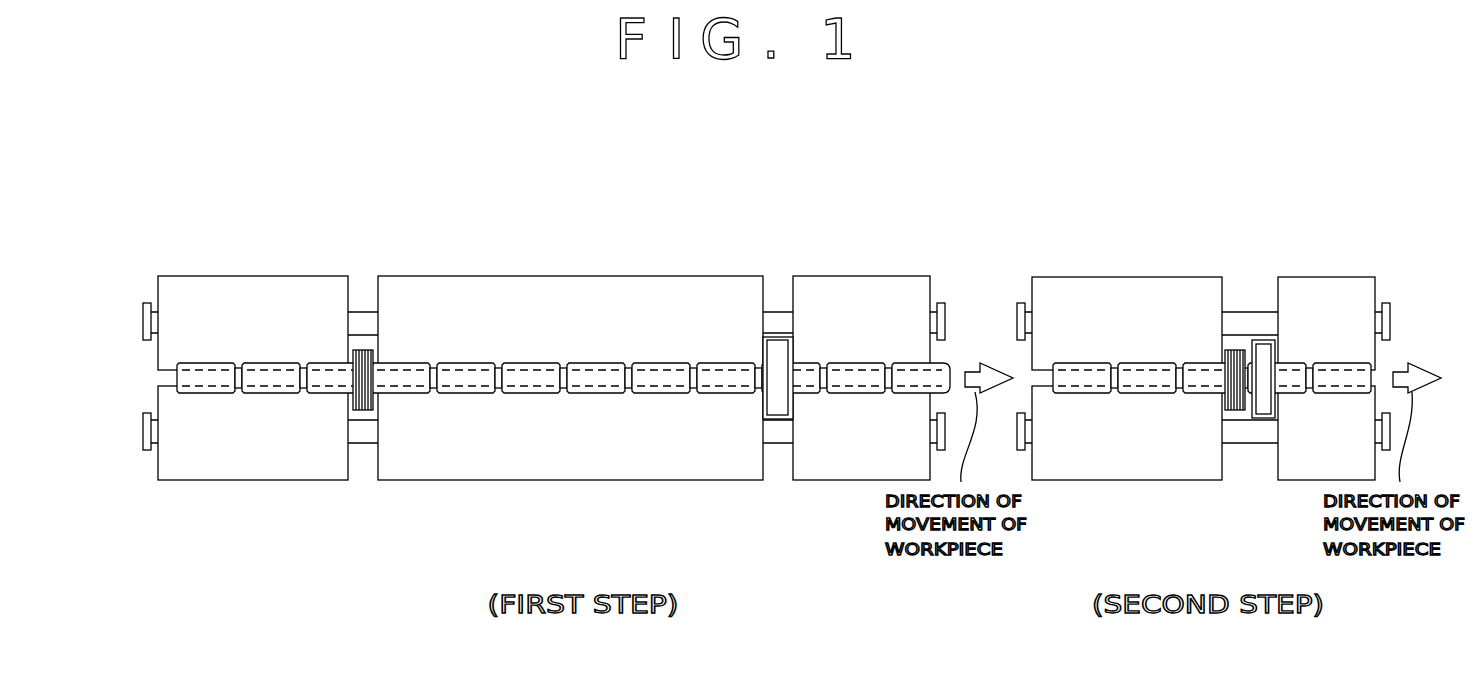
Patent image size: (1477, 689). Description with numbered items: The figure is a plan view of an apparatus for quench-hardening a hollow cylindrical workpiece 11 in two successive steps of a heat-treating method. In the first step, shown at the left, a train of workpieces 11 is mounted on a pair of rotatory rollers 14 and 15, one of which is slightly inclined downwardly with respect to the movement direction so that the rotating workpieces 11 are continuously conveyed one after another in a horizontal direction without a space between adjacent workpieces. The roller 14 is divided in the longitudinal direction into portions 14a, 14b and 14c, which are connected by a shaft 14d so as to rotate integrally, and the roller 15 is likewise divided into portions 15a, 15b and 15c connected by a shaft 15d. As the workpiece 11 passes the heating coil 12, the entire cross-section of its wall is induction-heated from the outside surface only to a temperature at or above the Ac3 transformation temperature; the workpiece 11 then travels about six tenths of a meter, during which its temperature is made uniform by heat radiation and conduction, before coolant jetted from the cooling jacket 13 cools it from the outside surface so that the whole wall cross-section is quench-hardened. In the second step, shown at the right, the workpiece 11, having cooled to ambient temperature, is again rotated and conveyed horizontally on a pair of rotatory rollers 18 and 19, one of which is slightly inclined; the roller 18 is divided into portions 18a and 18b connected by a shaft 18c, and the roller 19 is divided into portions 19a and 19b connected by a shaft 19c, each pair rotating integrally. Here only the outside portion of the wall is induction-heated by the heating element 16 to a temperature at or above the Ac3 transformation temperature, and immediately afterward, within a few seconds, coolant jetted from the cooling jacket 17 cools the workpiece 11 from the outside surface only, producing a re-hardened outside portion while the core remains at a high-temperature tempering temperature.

The hollow cylindrical workpiece 11 is at (470, 365).
The heating coil 12 is at (363, 348).
The cooling jacket 13 is at (777, 347).
The rotatory roller 14 is at (544, 271).
The portion of roller 14 14a is at (257, 296).
The portion of roller 14 14b is at (665, 304).
The portion of roller 14 14c is at (885, 296).
The shaft 14d is at (362, 320).
The rotatory roller 15 is at (544, 479).
The portion of roller 15 15a is at (285, 463).
The portion of roller 15 15b is at (565, 462).
The portion of roller 15 15c is at (832, 462).
The shaft 15d is at (365, 437).
The second forming tool 16 is at (1233, 352).
The cooling jacket 17 is at (1260, 420).
The rotatory roller 18 is at (1213, 276).
The portion of roller 18 18a is at (1107, 300).
The portion of roller 18 18b is at (1350, 296).
The shaft 18c is at (1232, 318).
The rotatory roller 19 is at (1203, 484).
The portion of roller 19 19a is at (1123, 465).
The portion of roller 19 19b is at (1312, 462).
The shaft 19c is at (1238, 435).